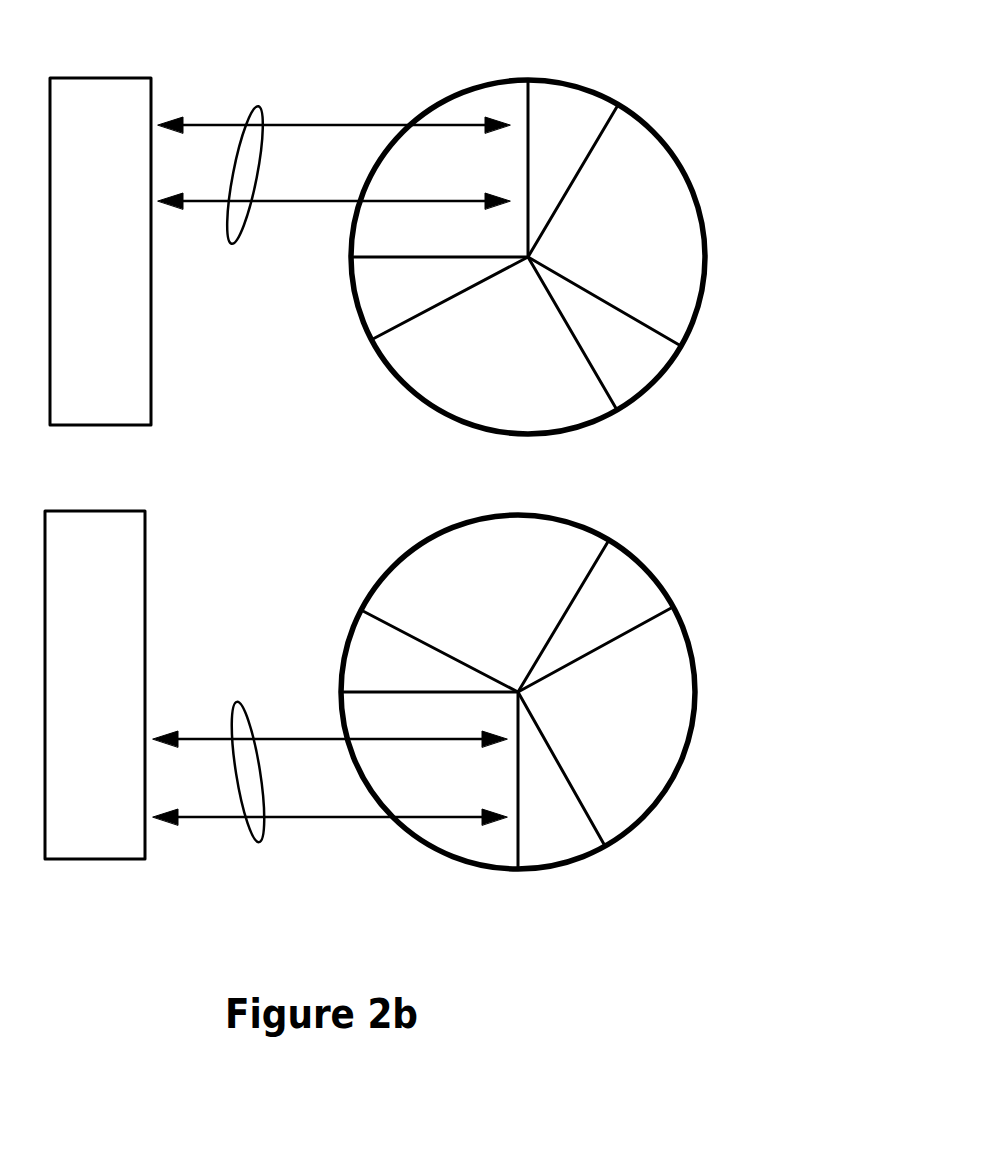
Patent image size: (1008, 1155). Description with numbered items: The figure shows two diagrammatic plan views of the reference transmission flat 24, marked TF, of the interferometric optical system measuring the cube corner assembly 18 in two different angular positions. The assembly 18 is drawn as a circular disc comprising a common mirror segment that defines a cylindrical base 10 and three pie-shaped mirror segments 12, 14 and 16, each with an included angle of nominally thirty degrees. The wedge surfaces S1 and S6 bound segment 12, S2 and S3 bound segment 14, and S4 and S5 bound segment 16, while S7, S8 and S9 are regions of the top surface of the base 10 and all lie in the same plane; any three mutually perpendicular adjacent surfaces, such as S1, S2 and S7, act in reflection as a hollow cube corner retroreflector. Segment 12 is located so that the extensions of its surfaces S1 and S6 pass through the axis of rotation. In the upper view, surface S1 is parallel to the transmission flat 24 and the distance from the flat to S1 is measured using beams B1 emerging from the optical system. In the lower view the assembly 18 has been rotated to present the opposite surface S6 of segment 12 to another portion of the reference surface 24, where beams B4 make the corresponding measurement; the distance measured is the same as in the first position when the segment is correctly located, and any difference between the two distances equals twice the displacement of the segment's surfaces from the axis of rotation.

The base 10 is at (692, 180).
The pie-shaped mirror segment 12 is at (568, 102).
The pie-shaped mirror segment 14 is at (368, 291).
The pie-shaped mirror segment 16 is at (633, 368).
The cube corner assembly 18 is at (727, 250).
The transmission flat 24 is at (89, 95).
The beams B1 is at (230, 247).
The fourth beam B4 is at (236, 702).
The plane surface S1 is at (525, 107).
The plane surface S2 is at (458, 253).
The plane surface S3 is at (430, 313).
The plane surface S4 is at (578, 353).
The plane surface S5 is at (625, 310).
The plane surface S6 is at (600, 143).
The top surface of base S7 is at (425, 166).
The top surface of base S8 is at (465, 341).
The top surface of base S9 is at (587, 229).